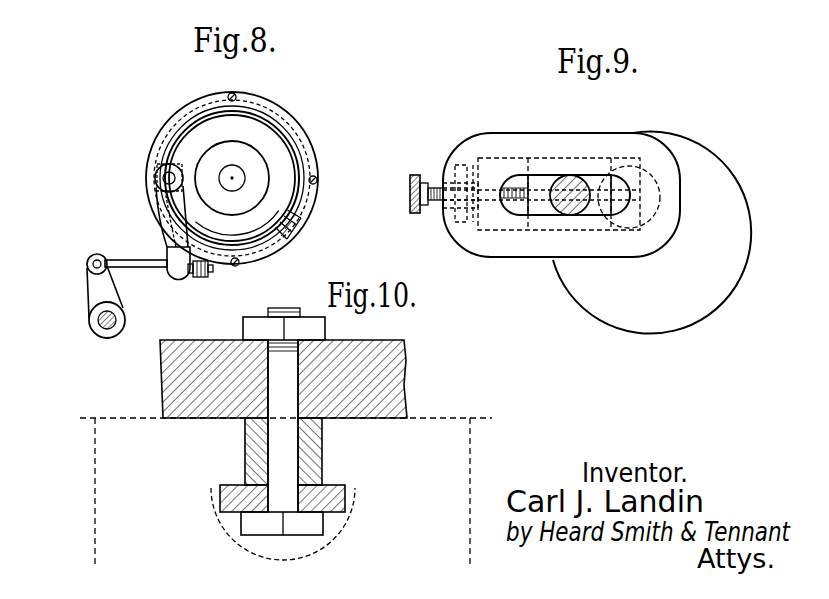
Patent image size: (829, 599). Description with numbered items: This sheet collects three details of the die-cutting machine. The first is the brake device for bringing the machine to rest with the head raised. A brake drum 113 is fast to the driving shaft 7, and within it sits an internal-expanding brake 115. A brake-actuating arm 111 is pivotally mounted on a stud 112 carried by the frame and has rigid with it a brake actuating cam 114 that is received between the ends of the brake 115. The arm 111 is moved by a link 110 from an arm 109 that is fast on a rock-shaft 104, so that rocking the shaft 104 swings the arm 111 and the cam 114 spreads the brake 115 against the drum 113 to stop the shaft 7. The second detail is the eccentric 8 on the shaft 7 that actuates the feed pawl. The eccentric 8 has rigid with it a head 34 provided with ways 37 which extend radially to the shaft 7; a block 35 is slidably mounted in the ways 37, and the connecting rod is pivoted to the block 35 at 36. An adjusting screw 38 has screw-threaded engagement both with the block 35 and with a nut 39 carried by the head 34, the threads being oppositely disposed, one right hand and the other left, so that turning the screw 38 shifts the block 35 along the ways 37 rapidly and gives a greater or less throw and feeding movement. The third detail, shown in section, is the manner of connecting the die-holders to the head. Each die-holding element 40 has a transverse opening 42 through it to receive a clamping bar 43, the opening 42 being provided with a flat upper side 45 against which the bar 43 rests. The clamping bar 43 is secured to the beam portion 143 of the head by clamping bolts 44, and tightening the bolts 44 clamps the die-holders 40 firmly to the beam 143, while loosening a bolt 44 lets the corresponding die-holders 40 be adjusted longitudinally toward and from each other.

In FIG. 8, the driving shaft 7 is at (236, 176).
In FIG. 9, the driving shaft 7 is at (659, 186).
In FIG. 9, the eccentric 8 is at (690, 310).
In FIG. 9, the head 34 is at (538, 134).
In FIG. 9, the block 35 is at (543, 209).
In FIG. 9, the pivot 36 is at (570, 214).
In FIG. 9, the ways 37 is at (569, 157).
In FIG. 9, the adjusting screw 38 is at (436, 187).
In FIG. 9, the nut 39 is at (462, 223).
In FIG. 10, the die-holding element 40 is at (463, 450).
In FIG. 10, the transverse opening 42 is at (340, 523).
In FIG. 10, the clamping bar 43 is at (225, 485).
In FIG. 10, the clamping bolt 44 is at (277, 432).
In FIG. 10, the flat upper side 45 is at (340, 485).
In FIG. 8, the rock-shaft 104 is at (97, 318).
In FIG. 8, the arm 109 is at (92, 287).
In FIG. 8, the link 110 is at (152, 267).
In FIG. 8, the brake-actuating arm 111 is at (173, 238).
In FIG. 8, the stud 112 is at (158, 168).
In FIG. 8, the brake drum 113 is at (286, 115).
In FIG. 8, the brake actuating cam 114 is at (163, 190).
In FIG. 8, the internal-expanding brake 115 is at (197, 117).
In FIG. 10, the beam portion 143 is at (390, 378).